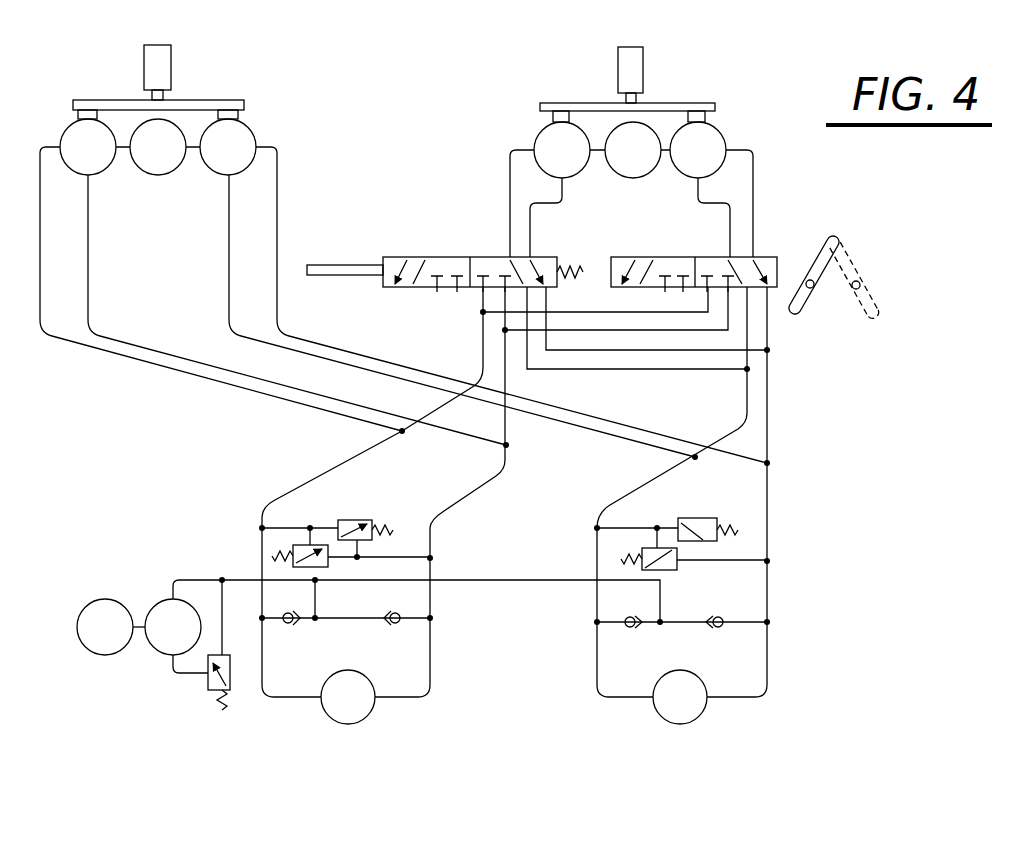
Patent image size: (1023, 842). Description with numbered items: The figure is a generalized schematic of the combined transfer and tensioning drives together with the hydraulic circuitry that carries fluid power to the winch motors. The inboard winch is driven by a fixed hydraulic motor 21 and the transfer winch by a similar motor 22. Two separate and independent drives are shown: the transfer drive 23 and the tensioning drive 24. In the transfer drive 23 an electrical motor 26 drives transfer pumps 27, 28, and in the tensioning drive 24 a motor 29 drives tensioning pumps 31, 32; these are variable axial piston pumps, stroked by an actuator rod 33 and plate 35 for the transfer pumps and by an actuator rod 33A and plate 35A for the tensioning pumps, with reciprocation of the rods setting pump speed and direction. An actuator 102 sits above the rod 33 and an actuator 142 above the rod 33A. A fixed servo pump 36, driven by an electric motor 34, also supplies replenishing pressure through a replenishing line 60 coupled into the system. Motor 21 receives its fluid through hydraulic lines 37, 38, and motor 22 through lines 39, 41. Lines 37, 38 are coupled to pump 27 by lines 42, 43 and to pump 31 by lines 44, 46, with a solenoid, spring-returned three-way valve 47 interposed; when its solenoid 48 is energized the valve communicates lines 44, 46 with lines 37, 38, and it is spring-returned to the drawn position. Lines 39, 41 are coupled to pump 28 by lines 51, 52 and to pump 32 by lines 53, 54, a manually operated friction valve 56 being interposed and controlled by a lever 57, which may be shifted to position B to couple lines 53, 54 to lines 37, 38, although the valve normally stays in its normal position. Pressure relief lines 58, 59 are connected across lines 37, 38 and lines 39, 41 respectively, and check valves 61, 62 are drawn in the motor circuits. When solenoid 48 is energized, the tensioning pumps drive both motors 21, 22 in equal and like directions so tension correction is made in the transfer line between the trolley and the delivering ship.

The fixed hydraulic motor 21 is at (344, 727).
The hydraulic motor 22 is at (660, 729).
The transfer drive 23 is at (169, 75).
The tensioning drive 24 is at (620, 83).
The electrical motor 26 is at (162, 175).
The transfer pump 27 is at (62, 131).
The transfer pump 28 is at (249, 139).
The motor 29 is at (633, 178).
The tensioning pump 31 is at (542, 131).
The tensioning pump 32 is at (719, 136).
The actuator rod 33 is at (163, 98).
The actuator rod 33A is at (627, 98).
The electric motor 34 is at (113, 657).
The plate 35 is at (228, 103).
The plate 35A is at (540, 106).
The servo pump 36 is at (166, 600).
The hydraulic line 37 is at (280, 500).
The hydraulic line 38 is at (464, 504).
The hydraulic line 39 is at (633, 493).
The hydraulic line 41 is at (770, 500).
The hydraulic line 42 is at (253, 377).
The hydraulic line 43 is at (287, 398).
The hydraulic line 44 is at (508, 193).
The hydraulic line 46 is at (532, 222).
The three-way valve 47 is at (457, 240).
The solenoid 48 is at (343, 252).
The hydraulic line 51 is at (390, 376).
The hydraulic line 52 is at (447, 358).
The hydraulic line 53 is at (728, 223).
The hydraulic line 54 is at (755, 207).
The manually-operated friction valve 56 is at (673, 255).
The lever 57 is at (866, 300).
The pressure relief line 58 is at (263, 531).
The pressure relief line 59 is at (634, 527).
The replenishing line 60 is at (520, 583).
The check valve 61 is at (338, 620).
The check valve 62 is at (708, 600).
The actuator 102 is at (163, 62).
The actuator 142 is at (624, 62).